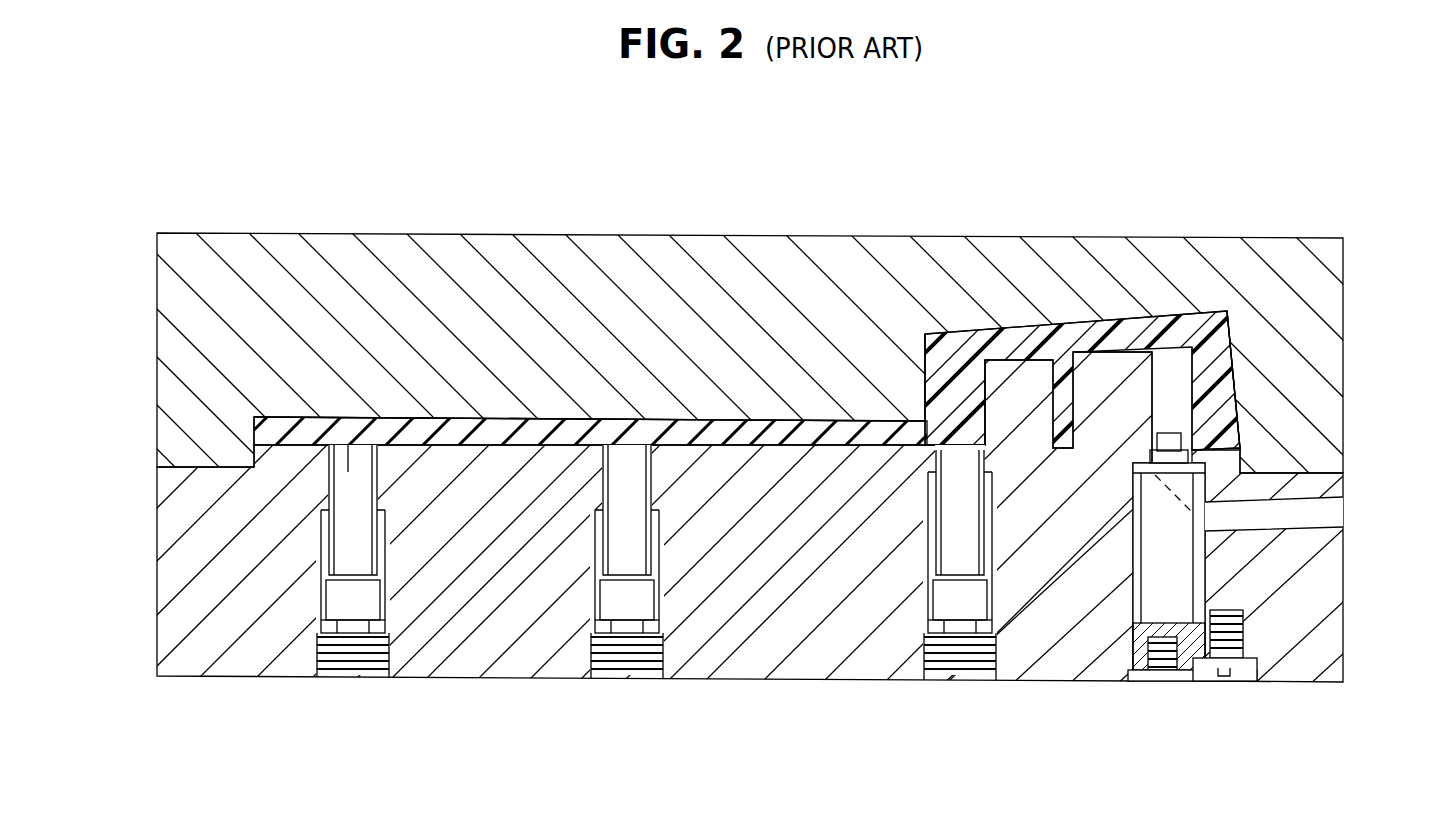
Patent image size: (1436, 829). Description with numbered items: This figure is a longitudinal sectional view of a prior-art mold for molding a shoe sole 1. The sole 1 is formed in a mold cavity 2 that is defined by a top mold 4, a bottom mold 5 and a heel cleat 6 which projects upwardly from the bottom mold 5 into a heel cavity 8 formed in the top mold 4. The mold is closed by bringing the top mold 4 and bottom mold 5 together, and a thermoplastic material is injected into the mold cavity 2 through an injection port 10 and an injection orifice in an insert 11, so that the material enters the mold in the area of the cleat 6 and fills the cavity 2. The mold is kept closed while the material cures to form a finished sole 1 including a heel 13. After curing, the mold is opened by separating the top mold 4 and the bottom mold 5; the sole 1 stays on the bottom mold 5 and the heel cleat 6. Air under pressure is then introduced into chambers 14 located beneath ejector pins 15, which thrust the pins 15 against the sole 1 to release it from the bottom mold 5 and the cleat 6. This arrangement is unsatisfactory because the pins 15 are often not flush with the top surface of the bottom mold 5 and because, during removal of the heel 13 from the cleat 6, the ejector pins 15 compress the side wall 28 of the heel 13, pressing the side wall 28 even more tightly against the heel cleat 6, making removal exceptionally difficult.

The shoe sole 1 is at (763, 420).
The mold cavity 2 is at (461, 418).
The top mold 4 is at (903, 250).
The bottom mold 5 is at (779, 679).
The heel cleat 6 is at (1104, 383).
The heel cavity 8 is at (967, 329).
The injection port 10 is at (1343, 526).
The insert 11 is at (1155, 463).
The heel 13 is at (1232, 379).
The chambers 14 is at (377, 624).
The ejector pins 15 is at (347, 472).
The side wall 28 is at (1231, 402).